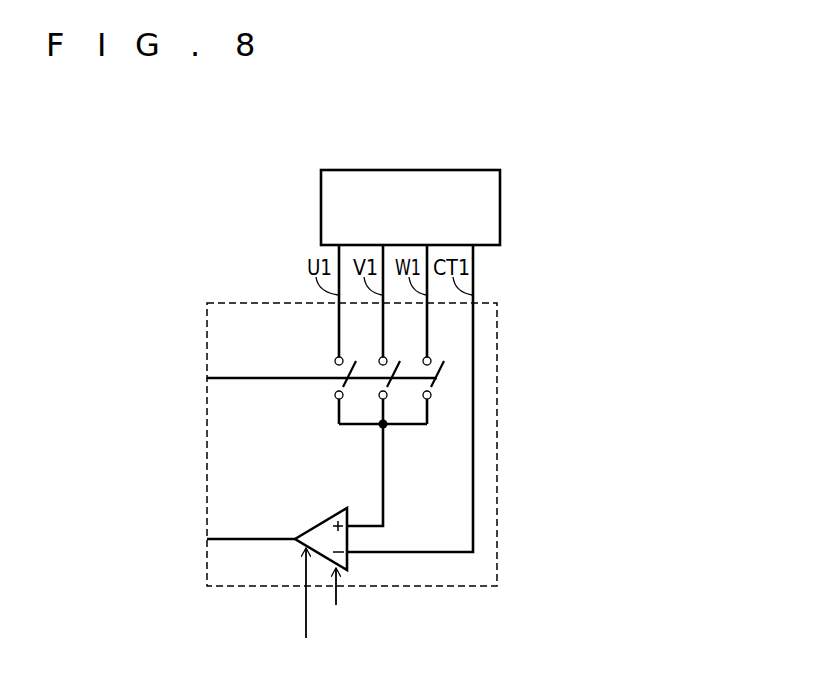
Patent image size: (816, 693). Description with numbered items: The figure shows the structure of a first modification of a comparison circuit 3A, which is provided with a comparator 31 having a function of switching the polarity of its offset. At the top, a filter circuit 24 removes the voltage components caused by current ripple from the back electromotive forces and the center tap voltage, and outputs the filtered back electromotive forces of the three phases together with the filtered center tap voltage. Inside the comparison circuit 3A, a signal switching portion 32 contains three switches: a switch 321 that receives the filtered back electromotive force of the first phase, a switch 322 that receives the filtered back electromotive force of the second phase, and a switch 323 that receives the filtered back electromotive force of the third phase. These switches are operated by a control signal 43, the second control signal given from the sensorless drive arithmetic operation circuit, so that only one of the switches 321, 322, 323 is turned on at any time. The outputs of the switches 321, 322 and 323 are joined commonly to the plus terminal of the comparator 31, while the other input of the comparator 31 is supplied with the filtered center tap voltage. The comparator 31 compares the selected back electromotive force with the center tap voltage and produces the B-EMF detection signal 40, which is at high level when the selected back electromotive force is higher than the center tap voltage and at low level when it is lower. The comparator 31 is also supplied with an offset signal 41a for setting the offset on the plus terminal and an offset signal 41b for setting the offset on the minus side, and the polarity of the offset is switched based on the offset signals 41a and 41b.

The filter circuit 24 is at (387, 166).
The comparison circuit 3A is at (499, 454).
The signal switching portion 32 is at (432, 407).
The switch 321 is at (331, 389).
The switch 322 is at (373, 389).
The switch 323 is at (419, 389).
The control signal 43 is at (281, 377).
The comparator 31 is at (322, 522).
The B-EMF detection signal 40 is at (238, 538).
The offset signal 41a is at (299, 605).
The offset signal 41b is at (336, 598).